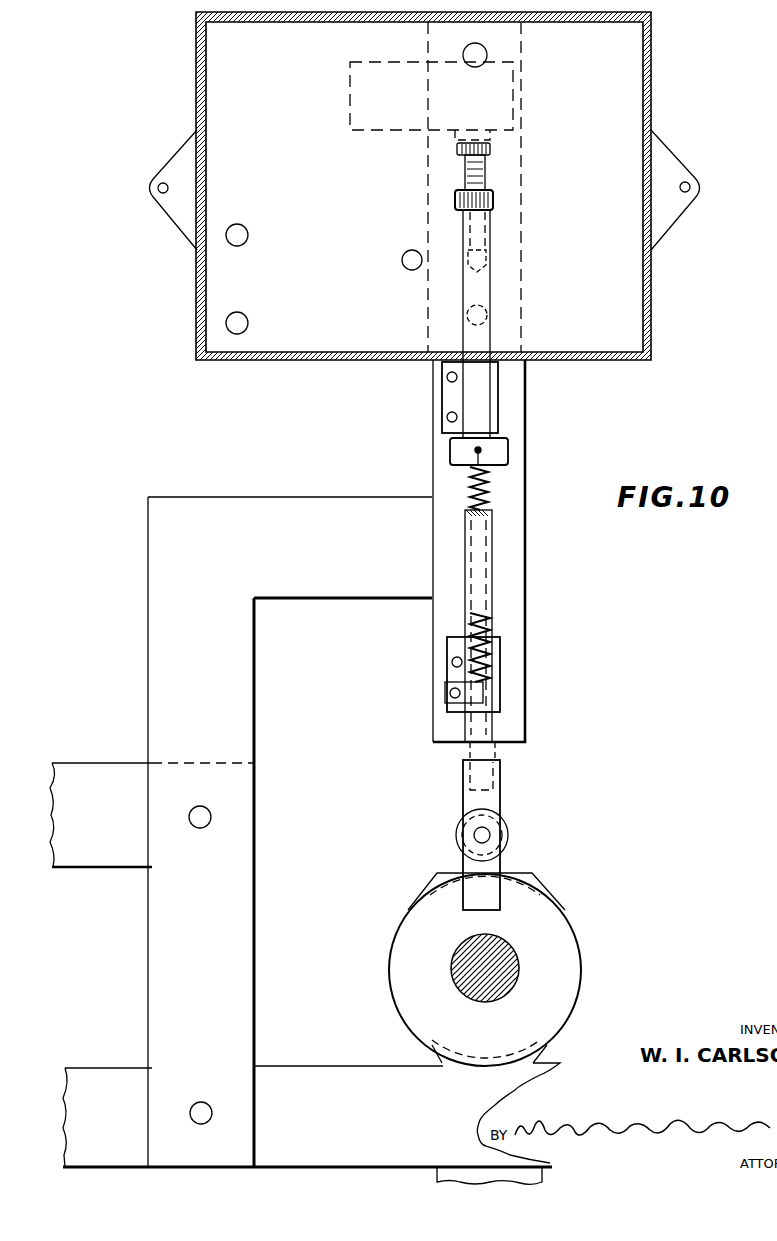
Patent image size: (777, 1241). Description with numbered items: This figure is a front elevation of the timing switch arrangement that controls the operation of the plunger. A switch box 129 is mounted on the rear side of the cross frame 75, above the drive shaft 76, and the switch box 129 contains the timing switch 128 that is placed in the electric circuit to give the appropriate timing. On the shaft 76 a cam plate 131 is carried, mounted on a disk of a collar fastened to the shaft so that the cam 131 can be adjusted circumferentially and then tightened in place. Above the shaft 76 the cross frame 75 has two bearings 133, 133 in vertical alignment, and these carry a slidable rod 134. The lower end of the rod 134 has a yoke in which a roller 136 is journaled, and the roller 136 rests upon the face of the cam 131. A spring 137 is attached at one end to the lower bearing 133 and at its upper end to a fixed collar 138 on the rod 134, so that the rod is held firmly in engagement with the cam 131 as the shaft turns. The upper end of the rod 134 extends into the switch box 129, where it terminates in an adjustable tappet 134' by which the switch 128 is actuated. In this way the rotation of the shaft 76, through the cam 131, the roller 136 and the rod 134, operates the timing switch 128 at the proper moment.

The cross frame 75 is at (240, 638).
The drive shaft 76 is at (513, 950).
The timing switch 128 is at (505, 88).
The switch box 129 is at (652, 92).
The cam plate 131 is at (412, 934).
The bearings 133 is at (494, 394).
The slidable rod 134 is at (525, 560).
The adjustable tappet 134' is at (519, 176).
The roller 136 is at (510, 830).
The spring 137 is at (490, 628).
The fixed collar 138 is at (510, 450).